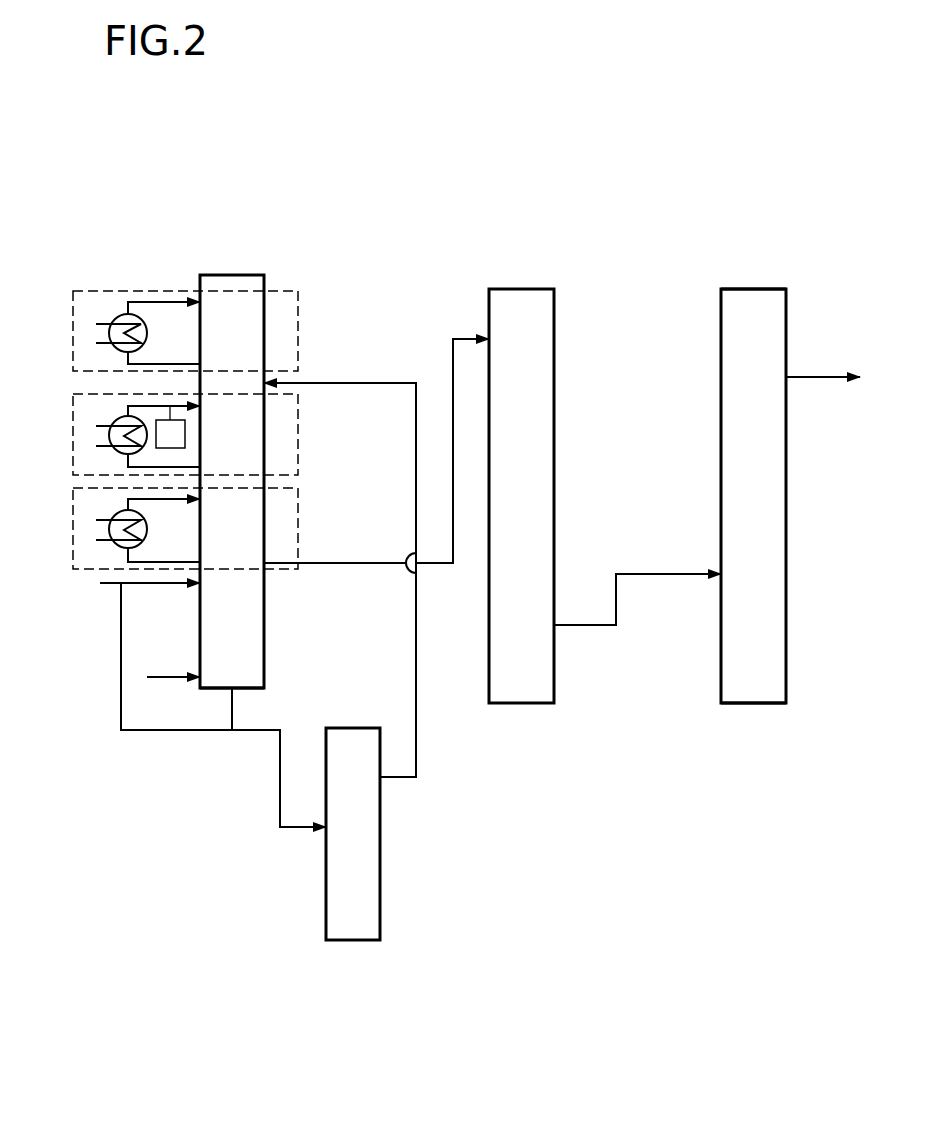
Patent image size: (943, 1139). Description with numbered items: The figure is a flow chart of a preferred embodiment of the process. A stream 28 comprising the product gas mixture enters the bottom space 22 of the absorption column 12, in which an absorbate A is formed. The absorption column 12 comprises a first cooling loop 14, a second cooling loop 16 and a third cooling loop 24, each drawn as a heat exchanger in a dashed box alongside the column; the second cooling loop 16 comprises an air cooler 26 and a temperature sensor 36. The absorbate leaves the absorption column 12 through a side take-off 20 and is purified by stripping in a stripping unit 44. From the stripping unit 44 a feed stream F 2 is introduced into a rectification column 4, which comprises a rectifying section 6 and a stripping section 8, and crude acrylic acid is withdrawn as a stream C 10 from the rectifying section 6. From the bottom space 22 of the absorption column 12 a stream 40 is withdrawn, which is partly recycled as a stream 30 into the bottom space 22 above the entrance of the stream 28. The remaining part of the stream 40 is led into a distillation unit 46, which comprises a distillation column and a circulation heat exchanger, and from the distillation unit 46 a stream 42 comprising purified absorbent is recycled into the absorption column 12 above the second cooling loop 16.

The feed stream F 2 is at (585, 628).
The rectification column 4 is at (746, 529).
The rectifying section 6 is at (743, 372).
The stripping section 8 is at (765, 629).
The stream C 10 is at (815, 377).
The absorption column 12 is at (222, 445).
The first cooling loop 14 is at (73, 520).
The second cooling loop 16 is at (163, 434).
The side take-off 20 is at (320, 565).
The bottom space 22 is at (225, 672).
The third cooling loop 24 is at (105, 291).
The air cooler 26 is at (127, 454).
The stream 28 is at (175, 677).
The stream 30 is at (105, 584).
The temperature sensor 36 is at (181, 445).
The stream 40 is at (232, 714).
The stream 42 is at (343, 383).
The stripping unit 44 is at (506, 529).
The distillation unit 46 is at (340, 845).